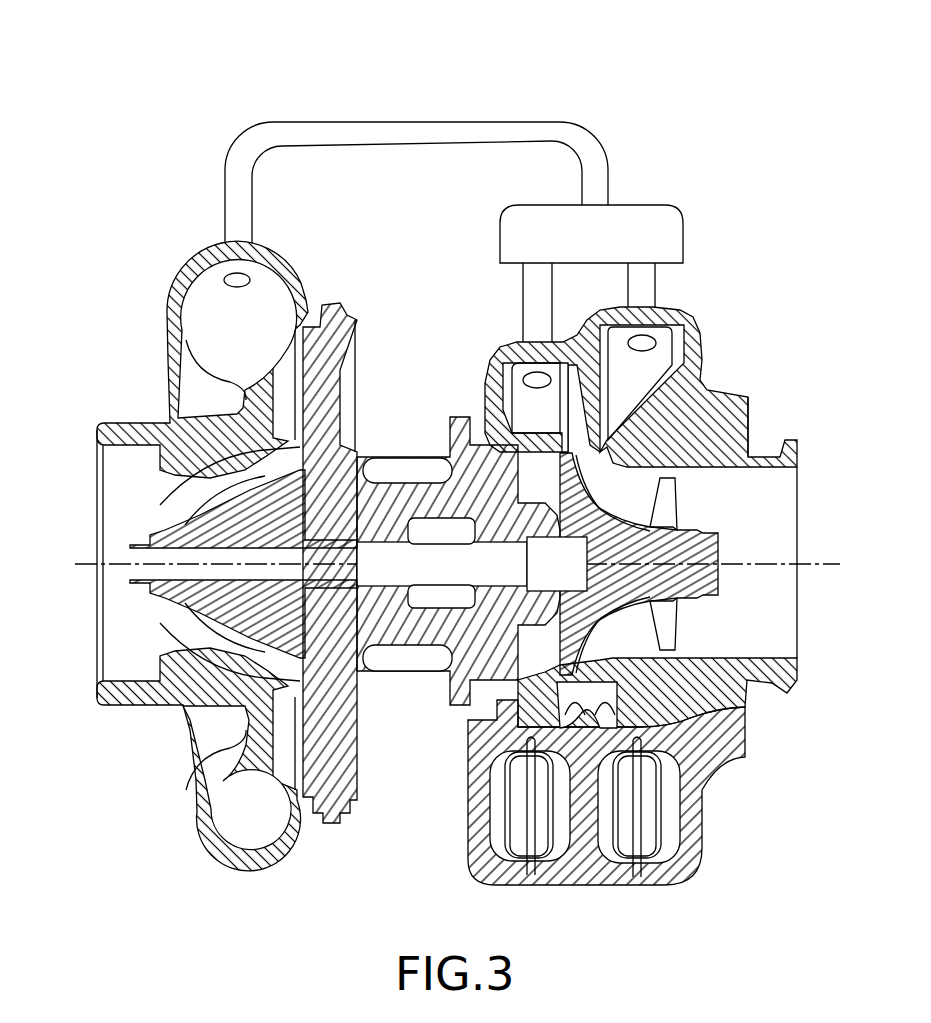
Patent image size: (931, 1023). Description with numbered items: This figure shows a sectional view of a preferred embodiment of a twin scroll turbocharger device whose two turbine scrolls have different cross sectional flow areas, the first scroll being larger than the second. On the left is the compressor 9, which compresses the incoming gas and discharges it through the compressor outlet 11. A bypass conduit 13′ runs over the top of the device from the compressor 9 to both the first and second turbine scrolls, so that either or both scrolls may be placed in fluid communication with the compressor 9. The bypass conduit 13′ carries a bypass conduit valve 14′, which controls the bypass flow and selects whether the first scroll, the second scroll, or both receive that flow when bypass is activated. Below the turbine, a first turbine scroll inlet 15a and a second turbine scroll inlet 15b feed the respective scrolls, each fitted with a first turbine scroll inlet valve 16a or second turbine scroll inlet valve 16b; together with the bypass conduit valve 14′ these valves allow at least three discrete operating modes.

The compressor 9 is at (148, 856).
The compressor outlet 11 is at (140, 248).
The bypass conduit 13′ is at (405, 132).
The bypass conduit valve 14′ is at (632, 212).
The first turbine scroll inlet 15a is at (670, 810).
The second turbine scroll inlet 15b is at (498, 812).
The first turbine scroll inlet valve 16a is at (648, 830).
The second turbine scroll inlet valve 16b is at (514, 832).